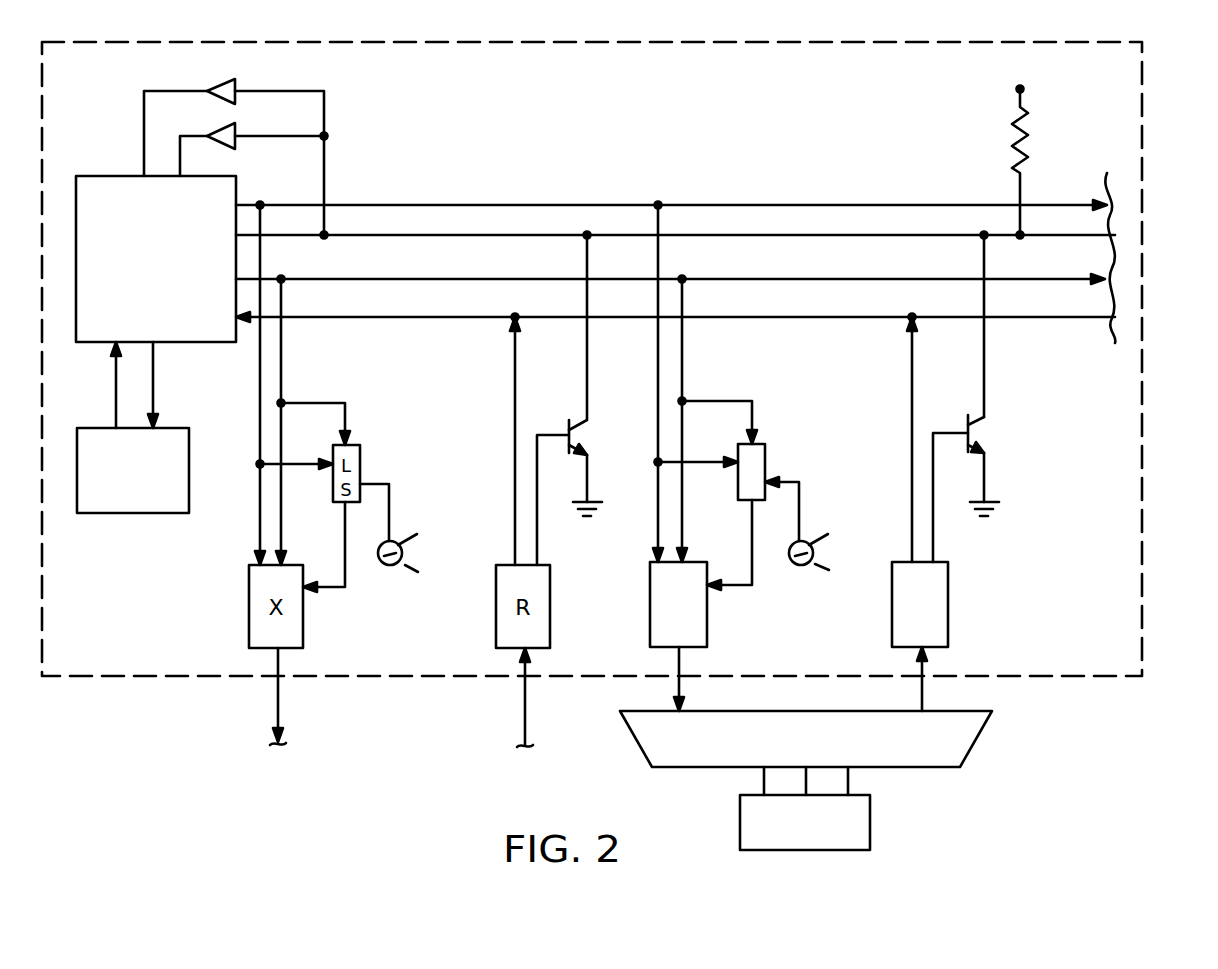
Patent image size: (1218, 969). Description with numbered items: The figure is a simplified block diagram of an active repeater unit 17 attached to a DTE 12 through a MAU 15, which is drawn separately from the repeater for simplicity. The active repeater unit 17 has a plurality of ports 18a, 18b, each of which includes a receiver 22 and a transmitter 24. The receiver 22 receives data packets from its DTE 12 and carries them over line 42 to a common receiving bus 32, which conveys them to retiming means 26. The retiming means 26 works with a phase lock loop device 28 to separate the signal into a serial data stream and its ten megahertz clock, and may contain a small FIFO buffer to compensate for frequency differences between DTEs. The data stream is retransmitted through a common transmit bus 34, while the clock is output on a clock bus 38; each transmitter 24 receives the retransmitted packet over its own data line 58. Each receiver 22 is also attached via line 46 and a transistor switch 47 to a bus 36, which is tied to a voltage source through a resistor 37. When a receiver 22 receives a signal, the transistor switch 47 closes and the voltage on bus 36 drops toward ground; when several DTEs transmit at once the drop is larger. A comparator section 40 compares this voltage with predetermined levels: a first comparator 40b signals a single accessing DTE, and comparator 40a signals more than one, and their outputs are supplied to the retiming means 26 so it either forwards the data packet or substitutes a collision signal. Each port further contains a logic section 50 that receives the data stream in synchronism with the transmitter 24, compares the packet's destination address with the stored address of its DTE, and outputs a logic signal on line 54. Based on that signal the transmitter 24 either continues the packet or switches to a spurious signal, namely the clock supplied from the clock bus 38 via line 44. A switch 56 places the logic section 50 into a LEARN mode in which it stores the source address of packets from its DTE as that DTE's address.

The DTE 12 is at (870, 830).
The MAU 15 is at (977, 737).
The active repeater unit 17 is at (1150, 324).
The port 18a is at (312, 696).
The port 18b is at (710, 679).
The receiver 22 is at (948, 623).
The transmitter 24 is at (707, 625).
The retiming means 26 is at (172, 342).
The phase lock loop device 28 is at (117, 513).
The common receiving bus 32 is at (1032, 315).
The common transmit bus 34 is at (1033, 277).
The bus 36 is at (1048, 233).
The resistor 37 is at (1032, 137).
The clock bus 38 is at (1070, 197).
The comparator section 40 is at (271, 116).
The comparator 40a is at (230, 84).
The first comparator 40b is at (254, 141).
The line 42 is at (908, 367).
The line 44 is at (656, 398).
The line 46 is at (987, 360).
The transistor switch 47 is at (983, 430).
The logic section 50 is at (766, 450).
The line 54 is at (752, 560).
The switch 56 is at (807, 538).
The data line 58 is at (684, 362).